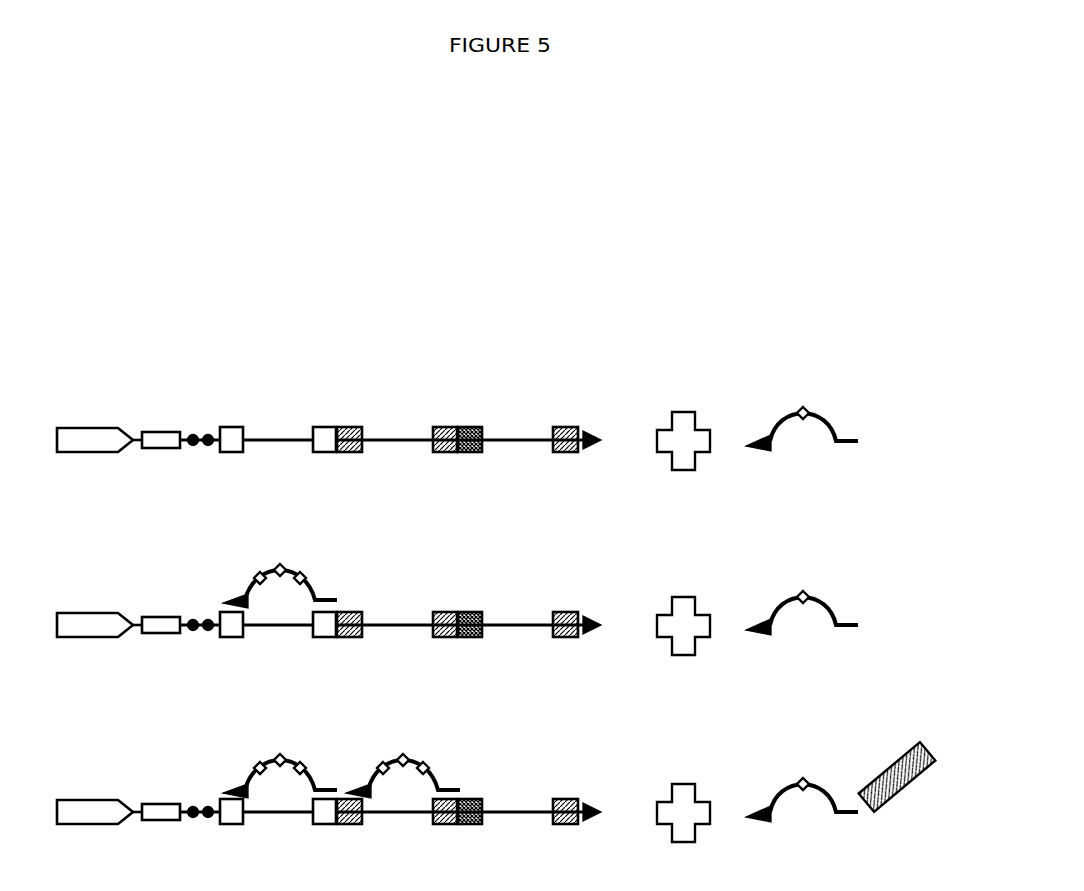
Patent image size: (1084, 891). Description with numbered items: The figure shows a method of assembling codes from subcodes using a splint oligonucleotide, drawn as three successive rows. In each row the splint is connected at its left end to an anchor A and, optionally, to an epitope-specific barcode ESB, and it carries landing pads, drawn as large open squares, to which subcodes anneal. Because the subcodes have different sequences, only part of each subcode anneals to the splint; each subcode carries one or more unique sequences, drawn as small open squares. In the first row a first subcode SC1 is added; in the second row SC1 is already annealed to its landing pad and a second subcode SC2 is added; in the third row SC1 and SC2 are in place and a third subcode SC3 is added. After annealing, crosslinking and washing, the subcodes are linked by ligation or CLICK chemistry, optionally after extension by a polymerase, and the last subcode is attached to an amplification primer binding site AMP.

The anchor A is at (99, 611).
The epitope-specific barcode ESB is at (161, 608).
The first subcode SC1 is at (540, 585).
The second subcode SC2 is at (602, 678).
The third subcode SC3 is at (802, 781).
The amplification primer binding site AMP is at (901, 765).